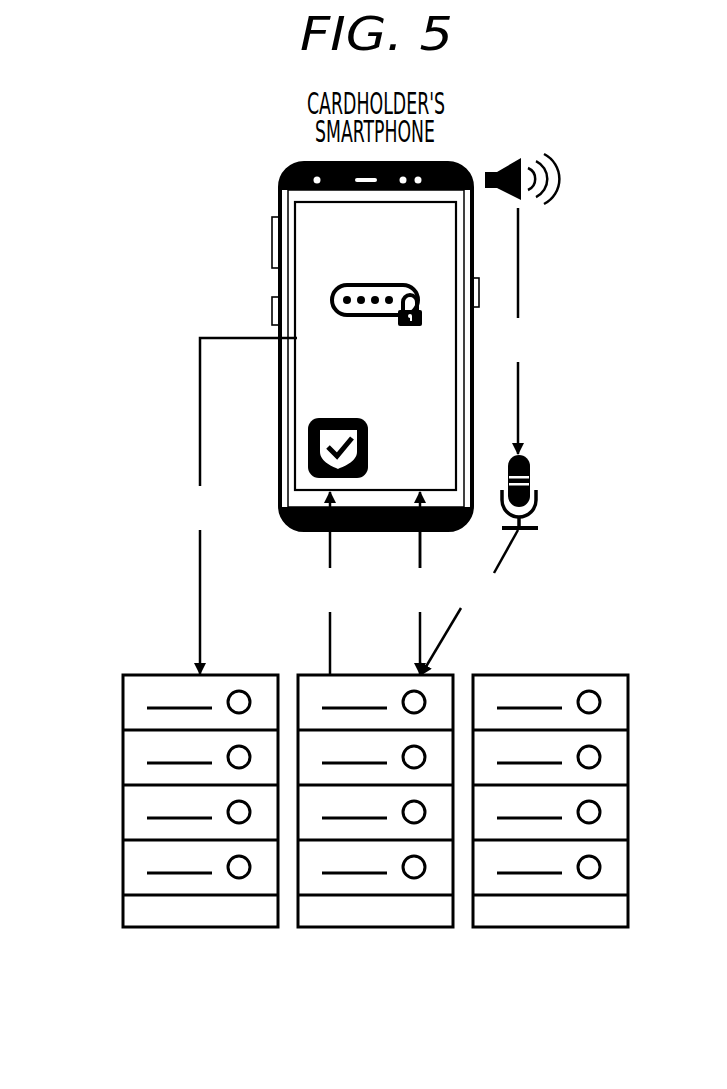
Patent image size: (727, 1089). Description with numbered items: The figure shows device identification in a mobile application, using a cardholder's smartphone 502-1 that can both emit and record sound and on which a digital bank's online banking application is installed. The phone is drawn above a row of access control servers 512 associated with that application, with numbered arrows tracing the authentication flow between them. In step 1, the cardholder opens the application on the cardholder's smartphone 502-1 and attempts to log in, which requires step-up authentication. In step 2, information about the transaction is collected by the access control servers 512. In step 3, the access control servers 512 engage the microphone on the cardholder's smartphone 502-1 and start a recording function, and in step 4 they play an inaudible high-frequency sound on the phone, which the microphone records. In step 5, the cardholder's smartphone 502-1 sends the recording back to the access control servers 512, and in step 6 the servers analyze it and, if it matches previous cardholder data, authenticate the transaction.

The cardholder's smartphone 502-1 is at (280, 193).
The access control servers 512 is at (123, 697).
The step 1 is at (377, 342).
The step 2 is at (237, 506).
The step 3 is at (420, 583).
The step 4 is at (522, 342).
The step 5 is at (469, 602).
The step 6 is at (330, 583).